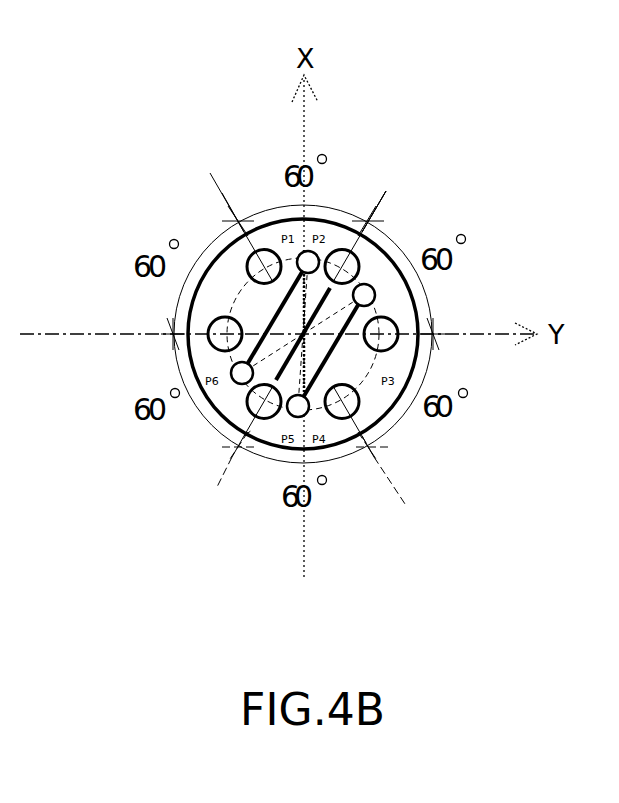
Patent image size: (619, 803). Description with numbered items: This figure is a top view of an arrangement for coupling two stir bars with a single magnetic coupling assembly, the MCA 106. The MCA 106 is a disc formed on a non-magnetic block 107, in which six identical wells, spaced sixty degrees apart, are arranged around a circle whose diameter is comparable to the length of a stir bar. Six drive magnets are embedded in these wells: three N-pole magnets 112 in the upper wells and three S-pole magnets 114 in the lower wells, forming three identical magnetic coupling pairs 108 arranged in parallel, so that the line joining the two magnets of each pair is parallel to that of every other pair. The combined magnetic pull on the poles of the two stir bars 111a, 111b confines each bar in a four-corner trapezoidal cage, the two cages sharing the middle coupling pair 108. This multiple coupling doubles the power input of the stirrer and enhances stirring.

The MCA 106 is at (188, 310).
The non-magnetic block 107 is at (345, 247).
The magnetic coupling pair 108 is at (165, 148).
The stir bar 111a is at (240, 382).
The stir bar 111b is at (323, 405).
The N-pole magnet 112 is at (397, 341).
The S-pole magnet 114 is at (357, 412).